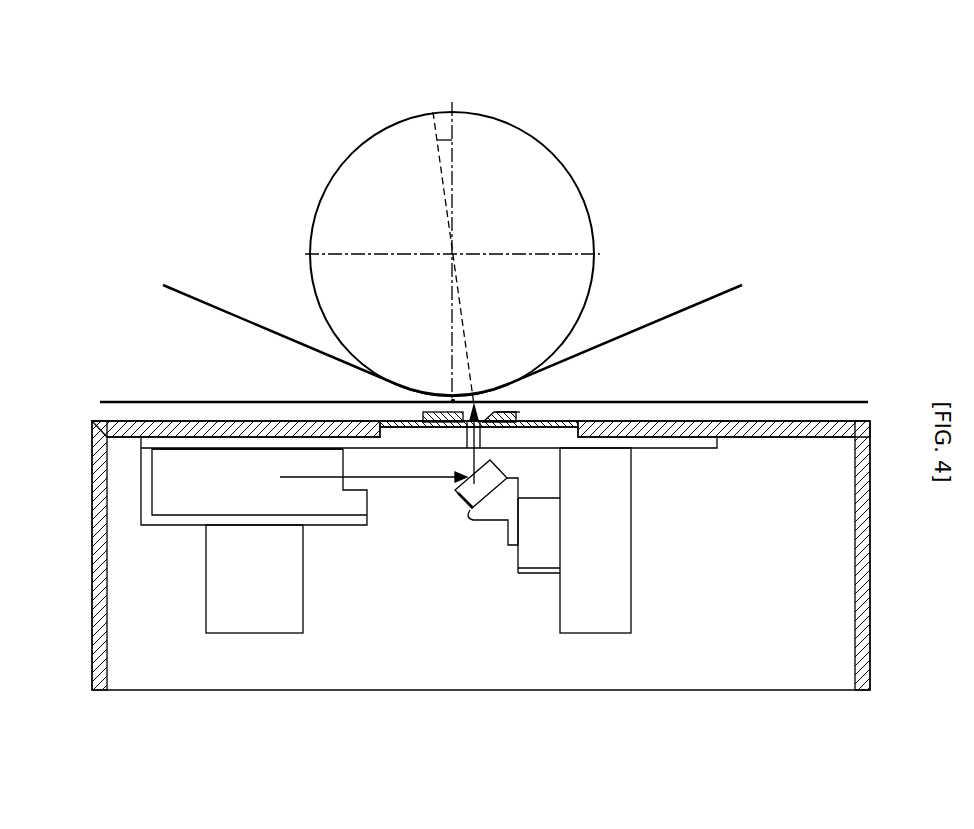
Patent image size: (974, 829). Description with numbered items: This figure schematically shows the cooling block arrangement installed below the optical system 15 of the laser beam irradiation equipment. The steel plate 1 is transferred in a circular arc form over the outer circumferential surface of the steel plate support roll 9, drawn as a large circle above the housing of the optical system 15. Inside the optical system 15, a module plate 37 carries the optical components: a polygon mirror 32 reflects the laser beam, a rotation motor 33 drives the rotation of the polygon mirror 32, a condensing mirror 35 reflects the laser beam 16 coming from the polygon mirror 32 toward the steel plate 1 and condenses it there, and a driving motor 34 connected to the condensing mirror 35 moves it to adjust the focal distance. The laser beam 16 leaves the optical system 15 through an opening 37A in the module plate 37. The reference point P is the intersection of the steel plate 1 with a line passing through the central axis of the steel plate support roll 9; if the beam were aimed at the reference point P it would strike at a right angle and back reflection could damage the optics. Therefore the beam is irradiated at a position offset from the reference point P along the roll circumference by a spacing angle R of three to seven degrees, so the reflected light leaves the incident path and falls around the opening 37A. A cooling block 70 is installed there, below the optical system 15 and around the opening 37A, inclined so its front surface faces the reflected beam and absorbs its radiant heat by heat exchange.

The steel plate 1 is at (688, 306).
The steel plate support roll 9 is at (357, 318).
The optical system 15 is at (438, 695).
The laser beam 16 is at (462, 442).
The polygon mirror 32 is at (170, 483).
The rotation motor 33 is at (245, 633).
The driving motor 34 is at (608, 633).
The condensing mirror 35 is at (487, 483).
The module plate 37 is at (668, 425).
The opening 37A is at (505, 412).
The cooling block 70 is at (503, 418).
The reference point P is at (452, 400).
The spacing angle R is at (462, 371).